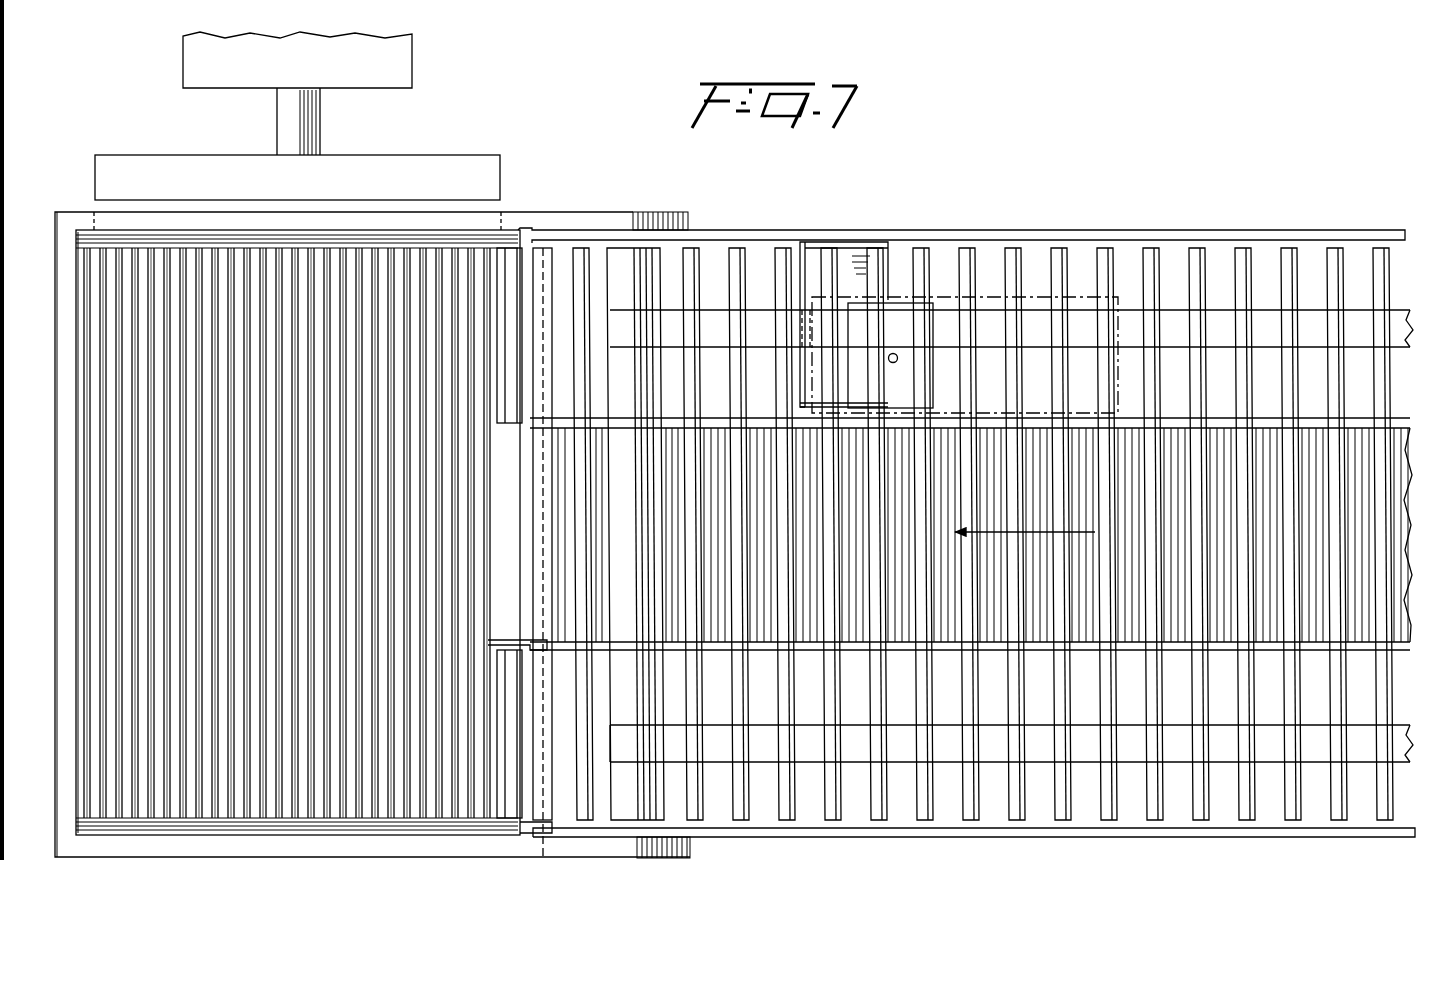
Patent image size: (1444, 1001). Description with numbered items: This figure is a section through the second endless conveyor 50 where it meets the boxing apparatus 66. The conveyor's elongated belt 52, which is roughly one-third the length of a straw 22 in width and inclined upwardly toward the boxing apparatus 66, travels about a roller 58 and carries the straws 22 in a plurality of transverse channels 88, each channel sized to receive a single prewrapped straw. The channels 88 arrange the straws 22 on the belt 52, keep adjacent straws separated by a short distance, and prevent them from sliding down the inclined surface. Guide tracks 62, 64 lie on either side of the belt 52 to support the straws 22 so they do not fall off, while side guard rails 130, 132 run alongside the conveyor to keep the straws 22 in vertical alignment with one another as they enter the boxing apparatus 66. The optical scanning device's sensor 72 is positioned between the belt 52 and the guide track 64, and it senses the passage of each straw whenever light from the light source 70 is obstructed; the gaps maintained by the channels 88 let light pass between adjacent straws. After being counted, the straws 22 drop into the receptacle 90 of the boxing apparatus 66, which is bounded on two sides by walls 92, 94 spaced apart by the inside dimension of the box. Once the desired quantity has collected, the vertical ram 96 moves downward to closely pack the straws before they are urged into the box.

The straw 22 is at (1288, 268).
The second endless conveyor 50 is at (1025, 314).
The belt 52 is at (1125, 645).
The roller 58 is at (626, 260).
The guide track 62 is at (805, 748).
The guide track 64 is at (1170, 322).
The boxing apparatus 66 is at (216, 97).
The light source 70 is at (1031, 300).
The sensor 72 is at (901, 302).
The transverse channels 88 is at (520, 623).
The receptacle 90 is at (372, 587).
The wall 92 is at (75, 290).
The wall 94 is at (518, 832).
The vertical ram 96 is at (400, 162).
The side guard rail 130 is at (1267, 832).
The side guard rail 132 is at (1103, 232).